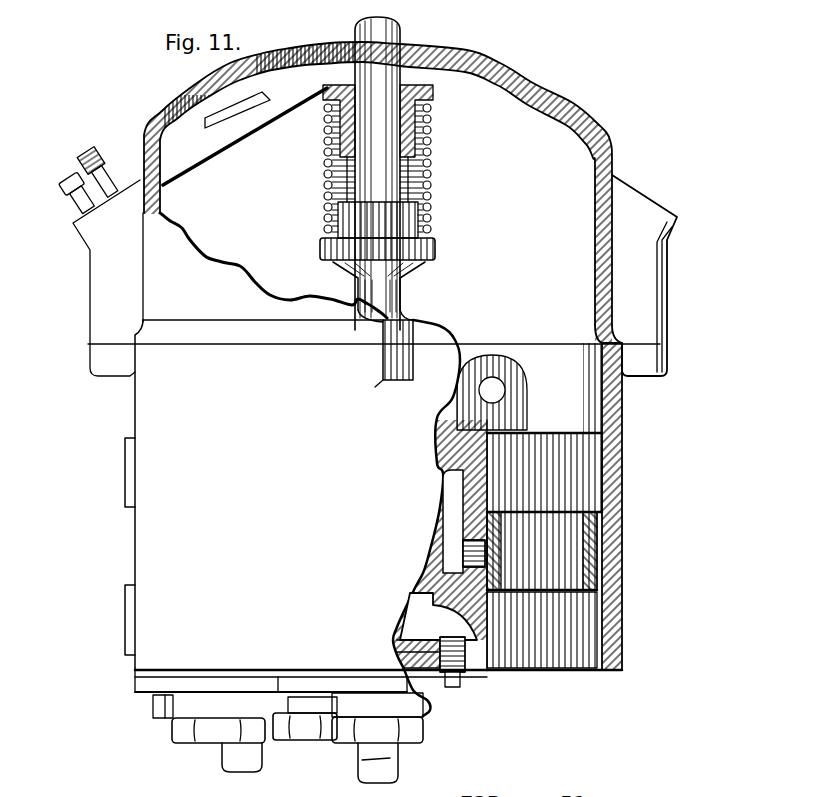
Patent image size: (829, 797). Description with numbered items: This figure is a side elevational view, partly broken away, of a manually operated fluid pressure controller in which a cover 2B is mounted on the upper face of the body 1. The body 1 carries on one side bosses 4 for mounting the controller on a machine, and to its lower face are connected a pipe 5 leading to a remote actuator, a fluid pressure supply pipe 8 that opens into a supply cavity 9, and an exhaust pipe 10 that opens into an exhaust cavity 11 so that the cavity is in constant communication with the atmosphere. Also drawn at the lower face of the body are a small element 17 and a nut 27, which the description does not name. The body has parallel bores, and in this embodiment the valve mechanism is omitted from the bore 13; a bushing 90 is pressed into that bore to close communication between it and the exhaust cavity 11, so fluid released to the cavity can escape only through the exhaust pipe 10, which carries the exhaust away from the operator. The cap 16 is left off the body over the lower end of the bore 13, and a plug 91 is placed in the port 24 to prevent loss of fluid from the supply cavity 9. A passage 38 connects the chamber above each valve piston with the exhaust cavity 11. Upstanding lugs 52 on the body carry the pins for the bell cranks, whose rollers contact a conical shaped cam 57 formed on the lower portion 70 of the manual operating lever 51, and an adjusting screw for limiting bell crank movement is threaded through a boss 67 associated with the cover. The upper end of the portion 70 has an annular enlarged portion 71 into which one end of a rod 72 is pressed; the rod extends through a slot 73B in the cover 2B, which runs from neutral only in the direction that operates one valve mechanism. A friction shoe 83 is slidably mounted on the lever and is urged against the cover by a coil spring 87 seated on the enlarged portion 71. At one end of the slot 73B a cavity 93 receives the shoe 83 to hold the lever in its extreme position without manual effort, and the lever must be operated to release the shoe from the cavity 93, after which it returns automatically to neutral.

The body 1 is at (622, 494).
The cover 2B is at (528, 83).
The bosses 4 is at (128, 590).
The pipe 5 is at (226, 758).
The fluid pressure supply pipe 8 is at (370, 752).
The cavity 9 is at (428, 608).
The exhaust pipe 10 is at (372, 775).
The exhaust cavity 11 is at (455, 500).
The bore 13 is at (584, 463).
The cap 16 is at (150, 682).
The spacer 17 is at (160, 707).
The port 24 is at (400, 652).
The nut 27 is at (185, 727).
The passage 38 is at (478, 557).
The manual operating lever 51 is at (388, 36).
The upstanding lugs 52 is at (512, 407).
The conical shaped cam 57 is at (412, 317).
The boss 67 is at (412, 330).
The portion of operating lever 70 is at (403, 290).
The annular enlarged portion 71 is at (436, 248).
The rod 72 is at (430, 173).
The slot 73B is at (305, 67).
The friction shoe 83 is at (433, 96).
The coil spring 87 is at (431, 152).
The bushing 90 is at (610, 556).
The plug 91 is at (463, 673).
The cavity 93 is at (230, 130).